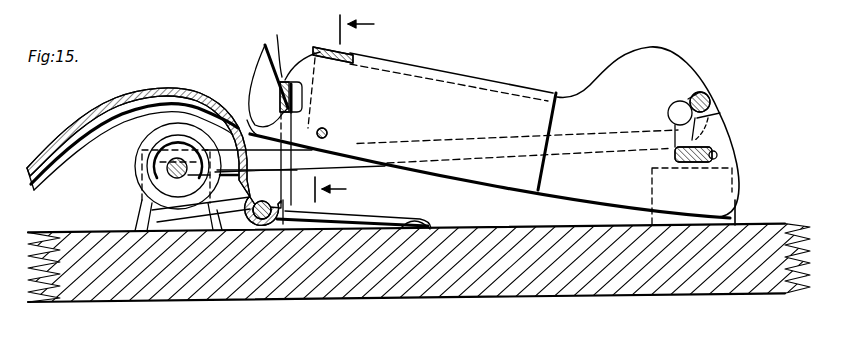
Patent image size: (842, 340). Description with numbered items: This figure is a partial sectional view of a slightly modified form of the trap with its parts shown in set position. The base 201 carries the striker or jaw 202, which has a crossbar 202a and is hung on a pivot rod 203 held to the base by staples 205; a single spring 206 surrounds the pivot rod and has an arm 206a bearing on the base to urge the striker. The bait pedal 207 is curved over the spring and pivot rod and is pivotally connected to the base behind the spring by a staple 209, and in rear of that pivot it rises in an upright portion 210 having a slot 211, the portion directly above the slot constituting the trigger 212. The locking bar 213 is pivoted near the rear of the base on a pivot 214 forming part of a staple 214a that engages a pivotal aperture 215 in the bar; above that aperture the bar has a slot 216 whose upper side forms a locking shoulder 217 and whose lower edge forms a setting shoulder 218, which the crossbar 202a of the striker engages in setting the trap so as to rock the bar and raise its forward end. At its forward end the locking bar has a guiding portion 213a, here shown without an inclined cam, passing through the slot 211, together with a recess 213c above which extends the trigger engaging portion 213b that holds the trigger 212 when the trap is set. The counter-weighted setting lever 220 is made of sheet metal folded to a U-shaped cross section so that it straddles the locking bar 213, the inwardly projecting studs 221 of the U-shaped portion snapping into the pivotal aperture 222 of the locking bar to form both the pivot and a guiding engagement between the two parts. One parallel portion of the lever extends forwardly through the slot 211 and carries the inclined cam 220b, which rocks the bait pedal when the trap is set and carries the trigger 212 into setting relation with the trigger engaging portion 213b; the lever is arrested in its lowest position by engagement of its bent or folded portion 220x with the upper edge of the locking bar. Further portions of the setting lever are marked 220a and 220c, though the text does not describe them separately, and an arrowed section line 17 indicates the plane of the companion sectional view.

The base 201 is at (194, 293).
The striker or jaw 202 is at (380, 164).
The crossbar of the striker 202a is at (711, 100).
The pivot rod 203 is at (162, 165).
The staples 205 is at (141, 202).
The spring 206 is at (153, 137).
The arm of the spring 206a is at (414, 224).
The bait pedal 207 is at (92, 115).
The staple 209 is at (215, 215).
The upright portion of the bait pedal 210 is at (296, 218).
The slot 211 is at (290, 184).
The trigger 212 is at (287, 78).
The locking bar 213 is at (574, 104).
The guiding portion 213a is at (238, 119).
The trigger engaging portion 213b is at (292, 74).
The recess 213c is at (280, 113).
The pivot 214 is at (706, 151).
The staple 214a is at (736, 215).
The pivotal aperture 215 is at (717, 155).
The slot 216 is at (681, 105).
The locking shoulder 217 is at (704, 94).
The setting shoulder 218 is at (720, 113).
The counter-weighted setting lever 220 is at (414, 66).
The tooth 220a is at (262, 80).
The inclined cam portion 220b is at (256, 47).
The hidden edge of plate 220c is at (302, 109).
The bent or folded portion 220x is at (552, 92).
The inwardly projecting studs 221 is at (274, 162).
The pivotal aperture 222 is at (327, 131).
The section line 17 is at (356, 108).